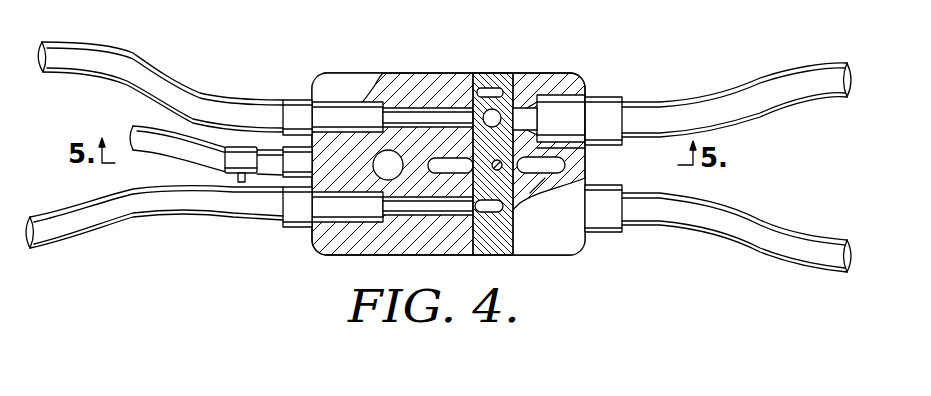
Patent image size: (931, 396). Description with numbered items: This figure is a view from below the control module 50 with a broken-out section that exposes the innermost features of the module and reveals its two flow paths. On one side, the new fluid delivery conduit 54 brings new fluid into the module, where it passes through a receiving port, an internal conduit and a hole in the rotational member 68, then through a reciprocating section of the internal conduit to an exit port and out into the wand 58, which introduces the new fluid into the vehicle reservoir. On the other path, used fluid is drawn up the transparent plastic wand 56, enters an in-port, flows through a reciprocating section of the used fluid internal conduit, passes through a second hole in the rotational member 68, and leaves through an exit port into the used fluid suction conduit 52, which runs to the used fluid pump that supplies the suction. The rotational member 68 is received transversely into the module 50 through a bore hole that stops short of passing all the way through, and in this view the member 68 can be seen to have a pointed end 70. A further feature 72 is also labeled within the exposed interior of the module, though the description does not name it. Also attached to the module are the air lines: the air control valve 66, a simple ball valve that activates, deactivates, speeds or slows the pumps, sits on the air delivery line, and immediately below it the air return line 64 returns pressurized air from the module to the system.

The control module 50 is at (468, 173).
The used fluid suction conduit 52 is at (127, 228).
The new fluid delivery conduit 54 is at (113, 43).
The transparent plastic wand 56 is at (692, 98).
The wand 58 is at (712, 237).
The air return line 64 is at (200, 137).
The air control valve 66 is at (245, 147).
The rotational member 68 is at (537, 78).
The pointed end 70 is at (487, 88).
The bore 72 is at (397, 151).